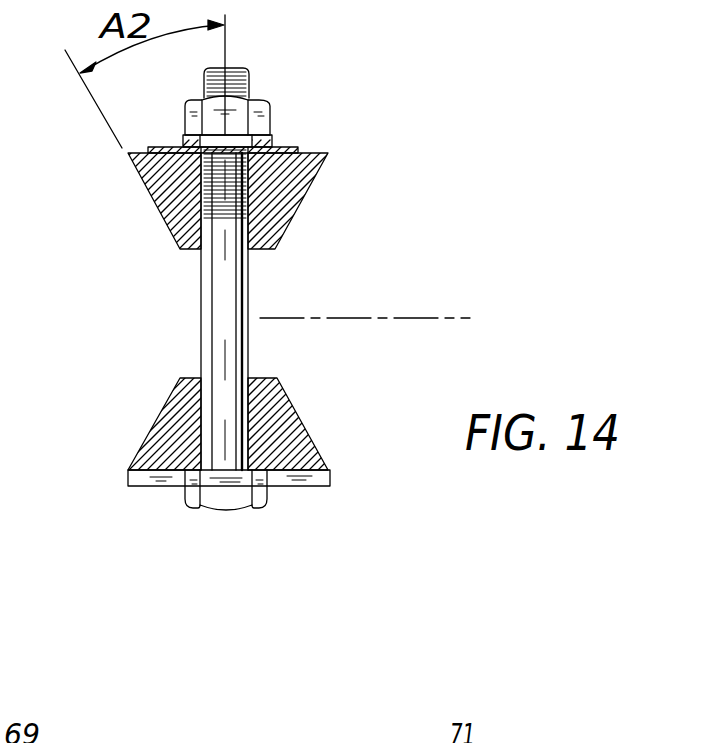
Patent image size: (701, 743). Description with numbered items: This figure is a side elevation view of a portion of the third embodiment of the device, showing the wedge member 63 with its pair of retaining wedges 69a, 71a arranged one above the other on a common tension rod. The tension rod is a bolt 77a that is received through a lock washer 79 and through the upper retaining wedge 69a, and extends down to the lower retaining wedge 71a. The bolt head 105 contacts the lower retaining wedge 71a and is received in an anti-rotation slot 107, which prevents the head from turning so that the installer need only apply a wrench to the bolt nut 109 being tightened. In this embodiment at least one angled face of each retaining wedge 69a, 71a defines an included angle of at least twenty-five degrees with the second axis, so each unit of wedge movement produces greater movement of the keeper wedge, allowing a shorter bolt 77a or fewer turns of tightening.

The wedge member 63 is at (352, 129).
The retaining wedge 69a is at (304, 197).
The retaining wedge 71a is at (293, 418).
The bolt 77a is at (222, 313).
The lock washer 79 is at (273, 143).
The bolt head 105 is at (220, 503).
The slot 107 is at (300, 483).
The bolt nut 109 is at (185, 115).